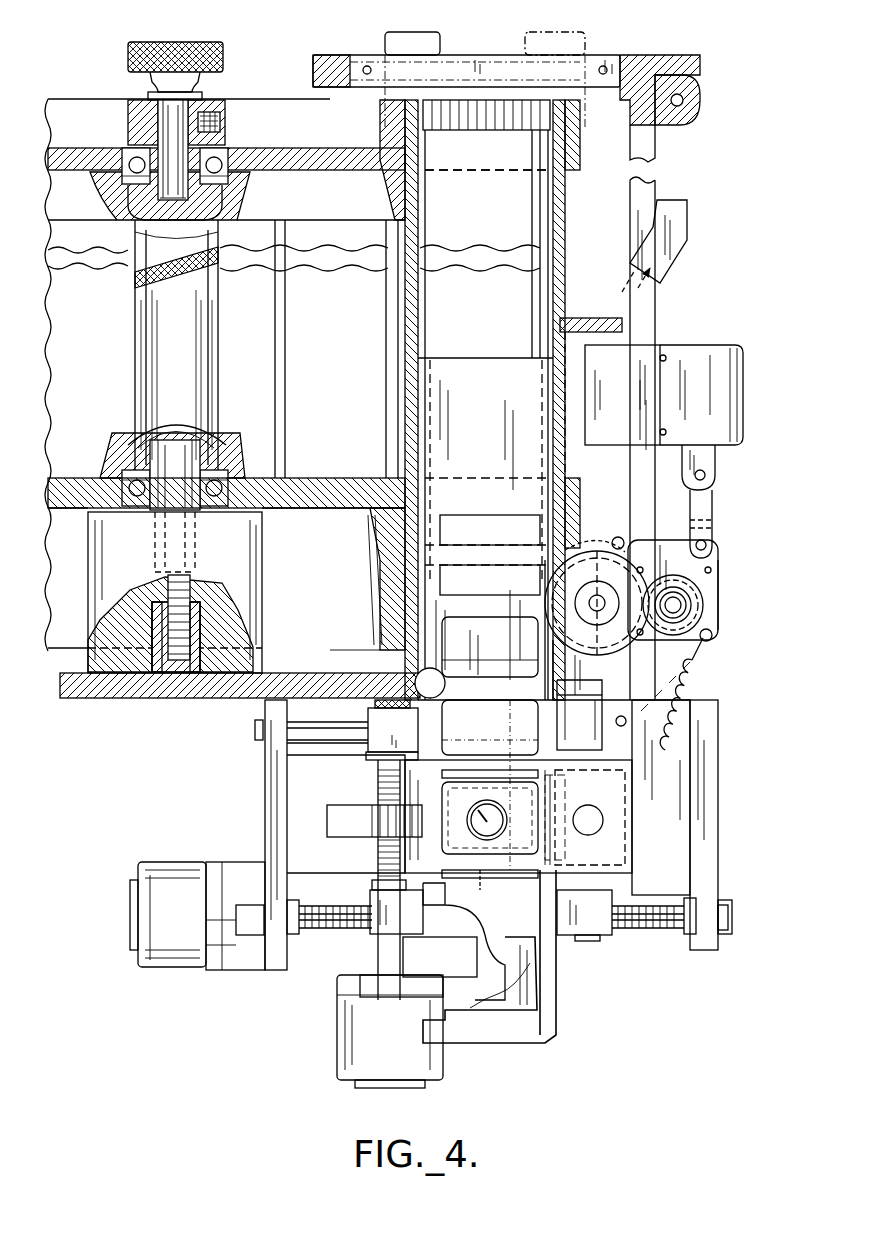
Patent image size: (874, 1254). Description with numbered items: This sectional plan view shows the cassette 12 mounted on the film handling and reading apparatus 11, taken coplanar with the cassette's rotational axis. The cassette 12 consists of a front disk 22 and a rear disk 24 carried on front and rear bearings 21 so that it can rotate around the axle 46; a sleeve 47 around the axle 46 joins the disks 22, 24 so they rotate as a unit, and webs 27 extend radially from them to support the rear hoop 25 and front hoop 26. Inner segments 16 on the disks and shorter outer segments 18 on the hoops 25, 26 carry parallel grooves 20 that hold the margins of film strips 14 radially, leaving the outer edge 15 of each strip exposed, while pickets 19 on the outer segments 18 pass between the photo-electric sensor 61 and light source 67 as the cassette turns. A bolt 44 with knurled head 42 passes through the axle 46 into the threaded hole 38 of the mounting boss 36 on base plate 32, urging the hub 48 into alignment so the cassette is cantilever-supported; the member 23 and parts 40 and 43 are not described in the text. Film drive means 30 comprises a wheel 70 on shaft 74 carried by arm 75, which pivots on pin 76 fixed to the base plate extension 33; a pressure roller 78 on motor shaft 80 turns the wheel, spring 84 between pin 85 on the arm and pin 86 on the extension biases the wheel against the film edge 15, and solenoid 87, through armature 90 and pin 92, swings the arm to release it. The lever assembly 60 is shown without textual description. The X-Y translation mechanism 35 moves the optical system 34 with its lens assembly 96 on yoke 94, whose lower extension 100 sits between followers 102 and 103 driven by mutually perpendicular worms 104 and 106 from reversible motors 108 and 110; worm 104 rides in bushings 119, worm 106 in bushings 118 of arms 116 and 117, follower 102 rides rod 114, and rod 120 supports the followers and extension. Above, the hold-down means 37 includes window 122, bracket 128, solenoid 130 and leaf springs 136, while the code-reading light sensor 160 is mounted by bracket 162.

The apparatus 11 is at (232, 1037).
The cassette 12 is at (94, 46).
The film strip 14 is at (498, 221).
The radially outer edge 15 is at (554, 659).
The inner segment 16 is at (400, 308).
The outer segment 18 is at (565, 210).
The picket 19 is at (575, 318).
The groove 20 is at (425, 162).
The bearing 21 is at (240, 184).
The front disk 22 is at (352, 478).
The wall 23 is at (396, 581).
The rear disk 24 is at (330, 151).
The rear hoop 25 is at (582, 140).
The front hoop 26 is at (492, 108).
The web 27 is at (470, 172).
The film drive means 30 is at (722, 573).
The base plate 32 is at (95, 699).
The base plate extension 33 is at (657, 311).
The optical system 34 is at (470, 819).
The X-Y translation mechanism 35 is at (328, 778).
The mounting boss 36 is at (202, 631).
The film hold-down means 37 is at (150, 699).
The threaded hole 38 is at (190, 655).
The adjusting knob assembly 40 is at (208, 34).
The knurled head 42 is at (225, 58).
The bushing 43 is at (228, 120).
The bolt 44 is at (186, 590).
The axle 46 is at (185, 428).
The sleeve 47 is at (219, 350).
The hub 48 is at (263, 544).
The lever assembly 60 is at (702, 279).
The cassette photo-electric sensor 61 is at (624, 394).
The light source 67 is at (690, 228).
The wheel 70 is at (591, 539).
The shaft 74 is at (596, 603).
The arm 75 is at (719, 629).
The pin 76 is at (618, 538).
The pressure roller 78 is at (703, 589).
The shaft 80 is at (681, 606).
The spring 84 is at (700, 655).
The pin 85 is at (712, 639).
The pin 86 is at (625, 727).
The solenoid 87 is at (746, 411).
The armature 90 is at (717, 469).
The pin 92 is at (712, 544).
The yoke 94 is at (345, 815).
The lens assembly 96 is at (502, 832).
The lower extension 100 is at (378, 841).
The follower 102 is at (593, 733).
The follower 103 is at (456, 930).
The worm 104 is at (378, 955).
The worm 106 is at (340, 930).
The drive motor 108 is at (341, 1061).
The drive motor 110 is at (165, 871).
The rod 114 is at (336, 722).
The arm 116 is at (262, 811).
The arm 117 is at (714, 837).
The bushing 118 is at (290, 905).
The bushing 119 is at (372, 754).
The rod 120 is at (590, 939).
The window 122 is at (455, 876).
The bracket 128 is at (622, 829).
The solenoid 130 is at (602, 819).
The leaf spring 136 is at (473, 770).
The light sensor 160 is at (441, 681).
The bracket 162 is at (424, 710).